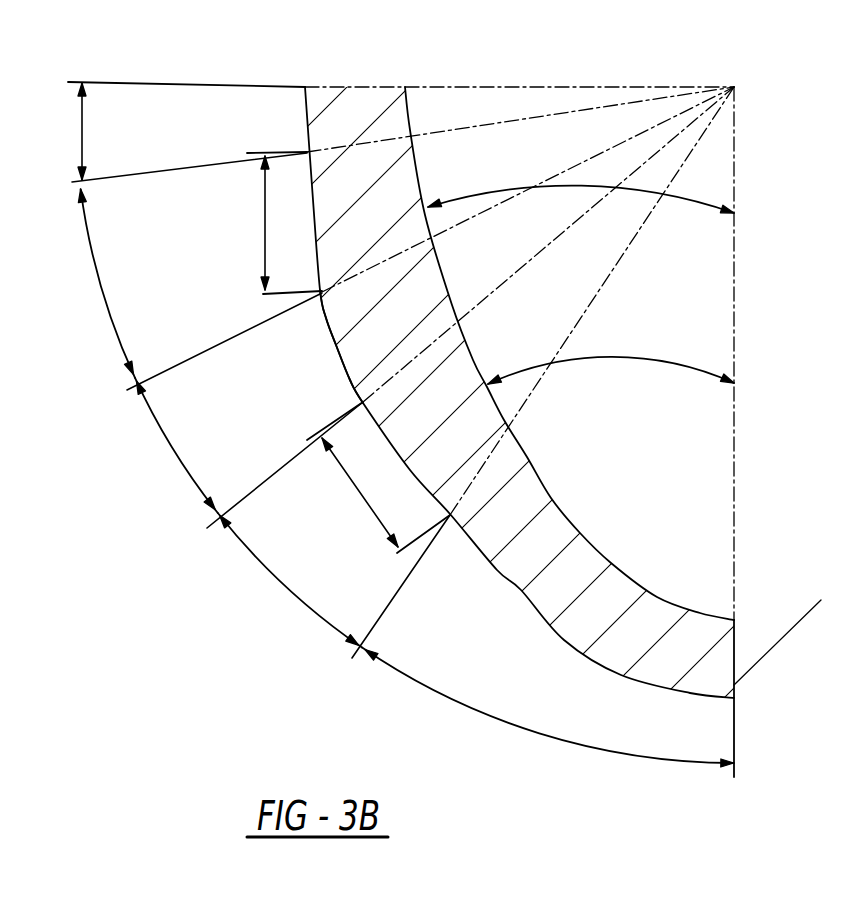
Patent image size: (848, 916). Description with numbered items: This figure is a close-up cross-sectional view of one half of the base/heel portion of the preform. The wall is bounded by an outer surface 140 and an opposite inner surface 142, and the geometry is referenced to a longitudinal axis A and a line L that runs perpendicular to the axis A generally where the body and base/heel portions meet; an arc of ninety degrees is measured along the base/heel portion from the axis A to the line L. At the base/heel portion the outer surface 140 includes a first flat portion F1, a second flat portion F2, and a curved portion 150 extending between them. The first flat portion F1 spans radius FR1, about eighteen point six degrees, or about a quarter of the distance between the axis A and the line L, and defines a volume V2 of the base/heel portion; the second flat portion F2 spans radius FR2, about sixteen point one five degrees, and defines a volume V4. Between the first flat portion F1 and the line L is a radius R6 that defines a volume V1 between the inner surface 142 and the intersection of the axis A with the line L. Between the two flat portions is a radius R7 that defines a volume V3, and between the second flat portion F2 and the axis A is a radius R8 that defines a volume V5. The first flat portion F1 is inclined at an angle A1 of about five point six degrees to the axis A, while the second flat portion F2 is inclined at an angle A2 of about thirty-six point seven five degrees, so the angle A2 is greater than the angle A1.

The outer surface 140 is at (569, 645).
The inner surface 142 is at (654, 597).
The curved portion 150 is at (333, 358).
The radius R6 is at (82, 138).
The radius R7 is at (163, 438).
The radius R8 is at (567, 741).
The radius FR1 is at (100, 283).
The radius FR2 is at (290, 593).
The first flat portion F1 is at (267, 218).
The second flat portion F2 is at (368, 503).
The angle A1 is at (506, 187).
The angle A2 is at (611, 358).
The longitudinal axis A is at (734, 513).
The line L is at (684, 83).
The volume V1 is at (479, 100).
The volume V2 is at (634, 110).
The volume V3 is at (686, 117).
The volume V4 is at (677, 150).
The volume V5 is at (712, 273).